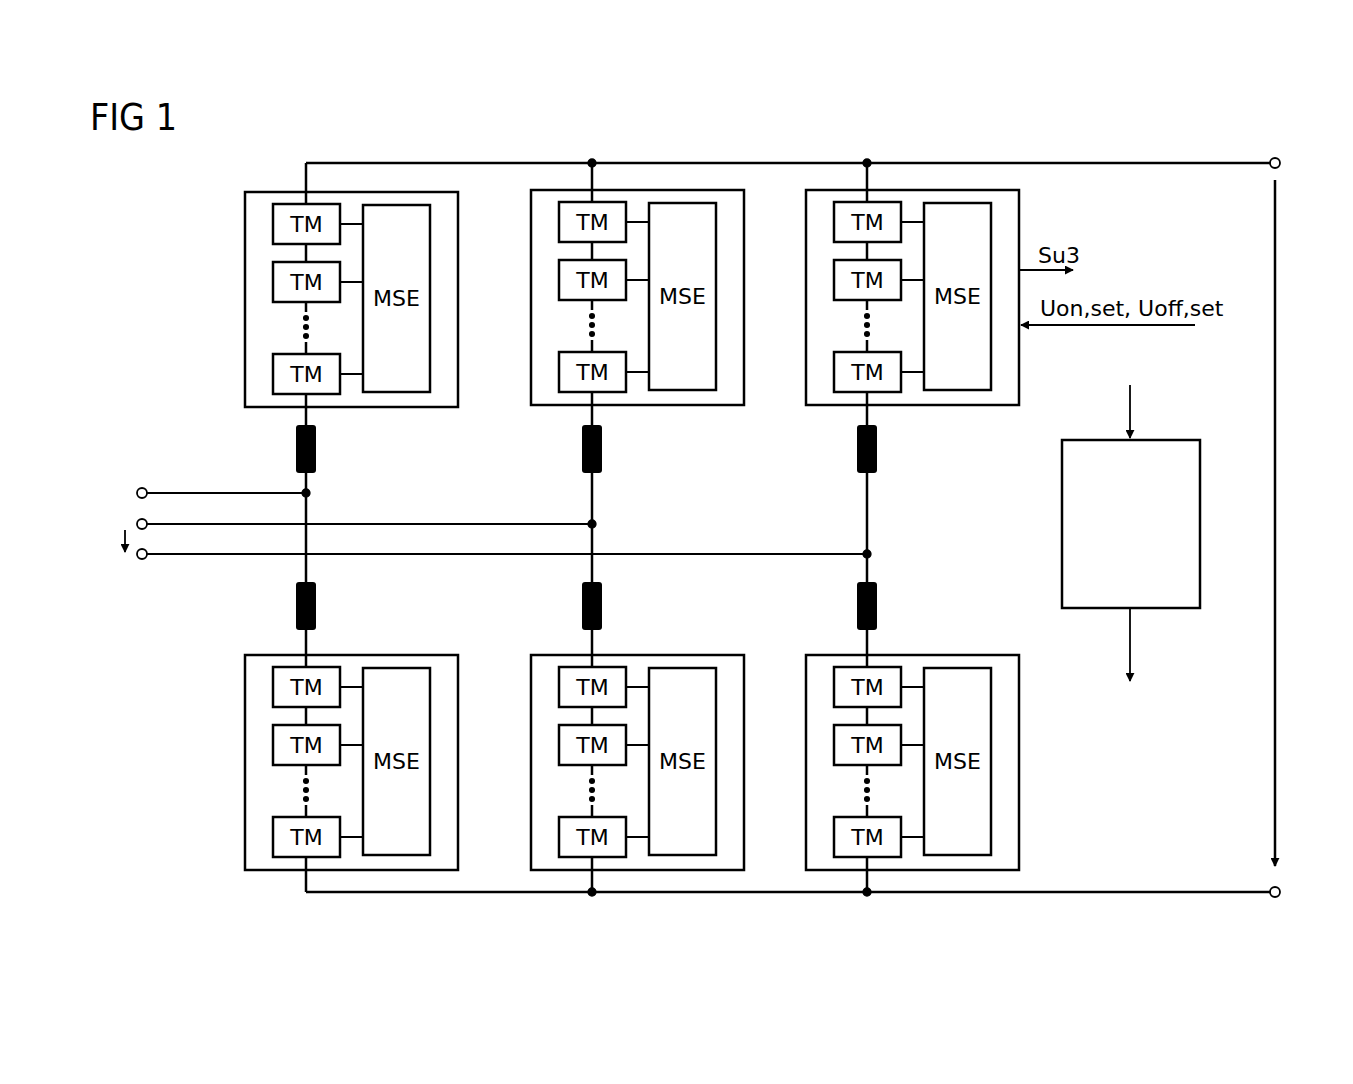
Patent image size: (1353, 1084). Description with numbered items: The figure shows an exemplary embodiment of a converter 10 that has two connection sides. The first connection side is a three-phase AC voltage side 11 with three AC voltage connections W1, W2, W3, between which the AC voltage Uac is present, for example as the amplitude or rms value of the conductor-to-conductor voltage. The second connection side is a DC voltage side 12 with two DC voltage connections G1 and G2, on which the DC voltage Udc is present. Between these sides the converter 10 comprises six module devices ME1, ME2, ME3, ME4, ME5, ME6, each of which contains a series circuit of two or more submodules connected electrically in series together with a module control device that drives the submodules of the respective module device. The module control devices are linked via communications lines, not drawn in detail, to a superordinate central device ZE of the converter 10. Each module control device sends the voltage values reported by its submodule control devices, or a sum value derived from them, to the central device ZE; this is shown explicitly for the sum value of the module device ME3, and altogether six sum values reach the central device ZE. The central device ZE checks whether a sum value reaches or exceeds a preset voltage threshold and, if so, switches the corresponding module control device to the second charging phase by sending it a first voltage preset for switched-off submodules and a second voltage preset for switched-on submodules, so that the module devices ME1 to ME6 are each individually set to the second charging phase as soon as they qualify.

The converter 10 is at (192, 419).
The three-phase AC voltage side 11 is at (476, 563).
The DC voltage side 12 is at (1300, 507).
The module device ME1 is at (245, 243).
The module device ME2 is at (746, 225).
The module device ME3 is at (1019, 202).
The module device ME4 is at (245, 772).
The module device ME5 is at (745, 690).
The module device ME6 is at (1019, 760).
The AC voltage connection W1 is at (142, 487).
The AC voltage connection W2 is at (136, 524).
The AC voltage connection W3 is at (142, 560).
The DC voltage connection G1 is at (1270, 159).
The DC voltage connection G2 is at (1271, 888).
The central device ZE is at (1062, 475).
The AC voltage Uac is at (103, 542).
The DC voltage Udc is at (1303, 530).